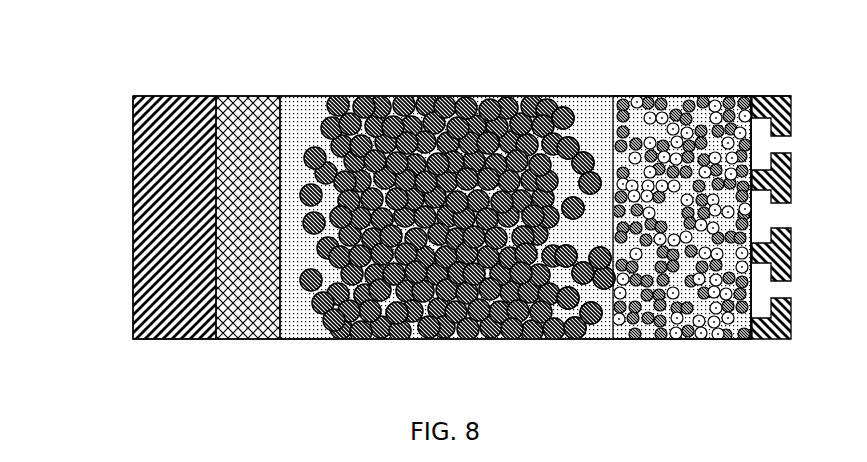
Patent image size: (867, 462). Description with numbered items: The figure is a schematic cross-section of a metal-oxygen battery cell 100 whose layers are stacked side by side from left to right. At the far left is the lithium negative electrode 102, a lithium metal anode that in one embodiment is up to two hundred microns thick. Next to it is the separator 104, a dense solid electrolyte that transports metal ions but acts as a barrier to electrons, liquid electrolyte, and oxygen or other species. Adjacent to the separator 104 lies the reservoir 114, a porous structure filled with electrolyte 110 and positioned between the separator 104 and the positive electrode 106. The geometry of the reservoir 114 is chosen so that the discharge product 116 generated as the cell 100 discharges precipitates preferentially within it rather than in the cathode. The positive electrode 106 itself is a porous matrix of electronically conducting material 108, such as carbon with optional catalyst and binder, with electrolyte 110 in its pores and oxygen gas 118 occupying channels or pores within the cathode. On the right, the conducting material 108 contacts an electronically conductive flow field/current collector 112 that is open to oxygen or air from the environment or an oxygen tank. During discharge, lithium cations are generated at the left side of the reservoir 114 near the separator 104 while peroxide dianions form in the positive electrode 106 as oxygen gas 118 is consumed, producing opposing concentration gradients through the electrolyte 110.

The battery cell 100 is at (127, 55).
The lithium negative electrode 102 is at (152, 88).
The separator 104 is at (223, 88).
The positive electrode 106 is at (635, 75).
The electronically conducting material 108 is at (698, 92).
The electrolyte 110 is at (290, 89).
The flow field/current collector 112 is at (750, 88).
The reservoir 114 is at (481, 89).
The discharge product 116 is at (408, 89).
The oxygen gas 118 is at (742, 203).